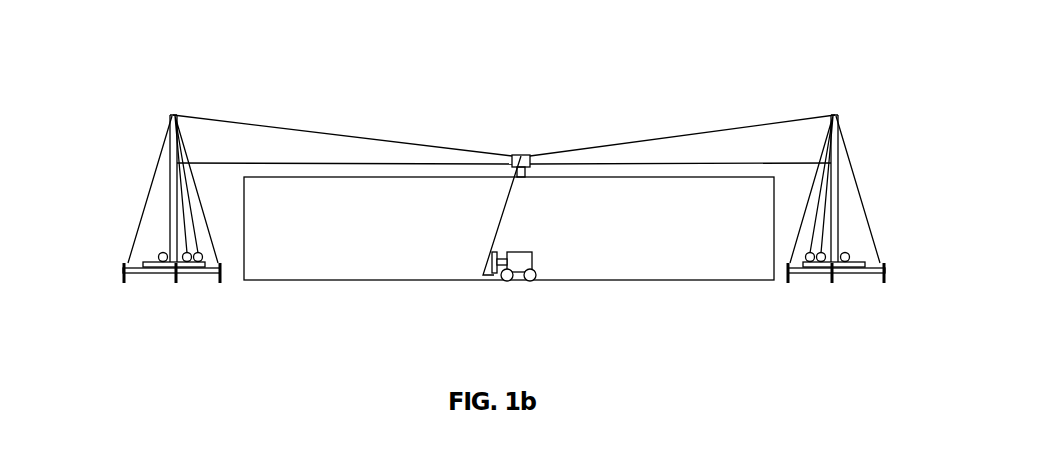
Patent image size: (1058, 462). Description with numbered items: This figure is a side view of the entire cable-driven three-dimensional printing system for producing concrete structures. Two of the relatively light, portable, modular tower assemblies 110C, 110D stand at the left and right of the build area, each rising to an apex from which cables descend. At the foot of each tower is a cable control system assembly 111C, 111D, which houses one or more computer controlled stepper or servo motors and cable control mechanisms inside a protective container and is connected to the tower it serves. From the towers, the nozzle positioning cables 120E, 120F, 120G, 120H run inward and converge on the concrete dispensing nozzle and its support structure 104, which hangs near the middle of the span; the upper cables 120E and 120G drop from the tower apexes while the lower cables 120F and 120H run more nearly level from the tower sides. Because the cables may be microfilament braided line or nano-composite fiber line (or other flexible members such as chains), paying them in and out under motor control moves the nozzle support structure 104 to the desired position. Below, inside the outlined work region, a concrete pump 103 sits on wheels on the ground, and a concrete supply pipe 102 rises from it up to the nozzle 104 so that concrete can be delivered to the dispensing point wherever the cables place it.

The tower assembly 110C is at (173, 106).
The tower assembly 110D is at (835, 106).
The cable control system assembly 111C is at (149, 257).
The cable control system assembly 111D is at (856, 257).
The positioning cable 120E is at (304, 122).
The positioning cable 120F is at (356, 157).
The positioning cable 120G is at (653, 132).
The positioning cable 120H is at (757, 157).
The concrete dispensing nozzle support structure 104 is at (520, 147).
The concrete supply pipe 102 is at (492, 206).
The concrete pump 103 is at (544, 257).